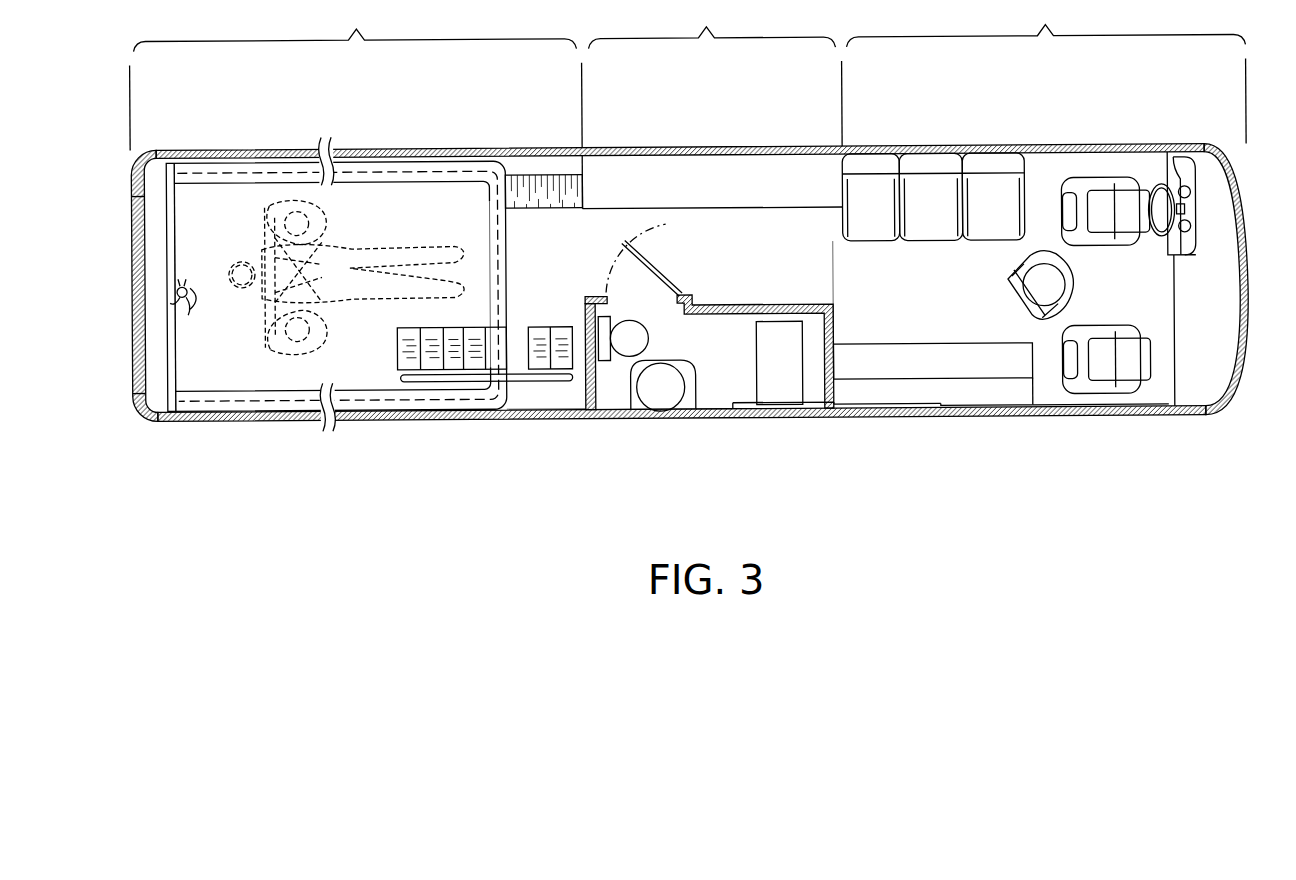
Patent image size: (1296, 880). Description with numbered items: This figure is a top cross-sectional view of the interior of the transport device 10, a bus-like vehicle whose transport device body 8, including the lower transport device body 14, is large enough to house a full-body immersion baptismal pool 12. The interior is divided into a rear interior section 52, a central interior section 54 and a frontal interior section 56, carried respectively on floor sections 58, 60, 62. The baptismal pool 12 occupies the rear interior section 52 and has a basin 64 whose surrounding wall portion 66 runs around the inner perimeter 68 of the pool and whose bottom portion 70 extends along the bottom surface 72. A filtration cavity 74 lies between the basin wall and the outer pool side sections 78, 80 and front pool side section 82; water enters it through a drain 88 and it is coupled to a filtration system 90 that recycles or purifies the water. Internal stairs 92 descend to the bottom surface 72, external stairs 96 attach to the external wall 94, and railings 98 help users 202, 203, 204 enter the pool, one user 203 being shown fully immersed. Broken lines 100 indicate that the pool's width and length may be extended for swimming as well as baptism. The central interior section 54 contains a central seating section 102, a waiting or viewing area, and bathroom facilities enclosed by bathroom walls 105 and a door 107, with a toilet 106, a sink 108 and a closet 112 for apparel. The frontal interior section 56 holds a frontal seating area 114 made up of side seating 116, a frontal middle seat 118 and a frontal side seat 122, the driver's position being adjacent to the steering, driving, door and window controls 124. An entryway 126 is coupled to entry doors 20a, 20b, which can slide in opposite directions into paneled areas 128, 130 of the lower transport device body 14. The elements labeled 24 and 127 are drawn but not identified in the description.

The transport device body 8 is at (1238, 388).
The transport device 10 is at (1219, 428).
The full-body immersion baptismal pool 12 is at (168, 330).
The lower transport device body 14 is at (598, 420).
The entry door 20a is at (884, 408).
The entry door 20b is at (976, 410).
The front end 24 is at (1250, 298).
The rear interior section 52 is at (353, 76).
The central interior section 54 is at (708, 74).
The frontal interior section 56 is at (1043, 73).
The floor section 58 is at (529, 245).
The floor section 60 is at (778, 262).
The floor section 62 is at (918, 296).
The basin 64 is at (157, 422).
The surrounding wall portion 66 is at (197, 387).
The inner perimeter 68 is at (415, 162).
The bottom portion 70 is at (191, 223).
The bottom surface 72 is at (428, 222).
The filtration cavity 74 is at (205, 172).
The outer pool side section 78 is at (243, 162).
The outer pool side section 80 is at (426, 418).
The front pool side section 82 is at (510, 172).
The drain 88 is at (188, 300).
The filtration system 90 is at (562, 150).
The internal stairs 92 is at (396, 346).
The external wall 94 is at (520, 395).
The external stairs 96 is at (537, 325).
The railings 98 is at (567, 382).
The broken lines 100 is at (330, 150).
The central seating section 102 is at (685, 147).
The bathroom walls 105 is at (808, 306).
The toilet 106 is at (645, 336).
The door 107 is at (650, 260).
The sink 108 is at (644, 398).
The closet 112 is at (763, 372).
The frontal seating area 114 is at (1040, 189).
The side seating 116 is at (933, 193).
The frontal middle seat 118 is at (1059, 300).
The frontal side seat 122 is at (1143, 397).
The steering, driving, door, and window controls 124 is at (1182, 160).
The entryway 126 is at (914, 373).
The driver seat 127 is at (1108, 180).
The paneled area 128 is at (760, 410).
The paneled area 130 is at (1070, 410).
The user 202 is at (282, 352).
The user 203 is at (228, 270).
The user 204 is at (324, 213).